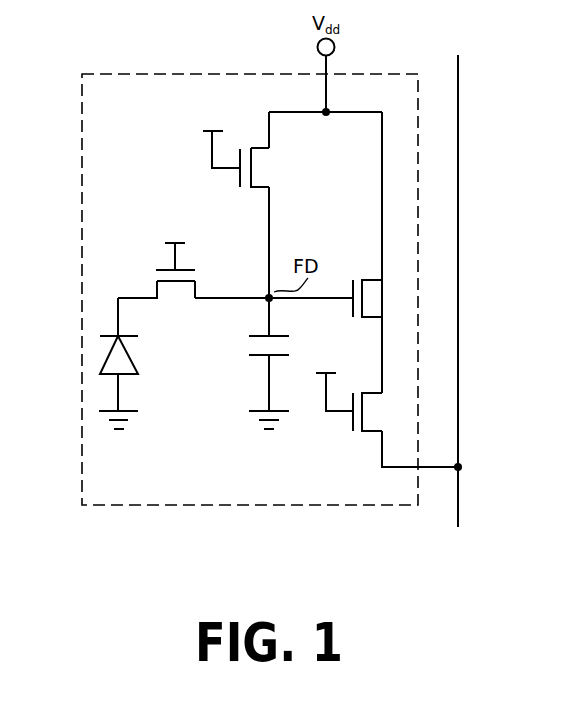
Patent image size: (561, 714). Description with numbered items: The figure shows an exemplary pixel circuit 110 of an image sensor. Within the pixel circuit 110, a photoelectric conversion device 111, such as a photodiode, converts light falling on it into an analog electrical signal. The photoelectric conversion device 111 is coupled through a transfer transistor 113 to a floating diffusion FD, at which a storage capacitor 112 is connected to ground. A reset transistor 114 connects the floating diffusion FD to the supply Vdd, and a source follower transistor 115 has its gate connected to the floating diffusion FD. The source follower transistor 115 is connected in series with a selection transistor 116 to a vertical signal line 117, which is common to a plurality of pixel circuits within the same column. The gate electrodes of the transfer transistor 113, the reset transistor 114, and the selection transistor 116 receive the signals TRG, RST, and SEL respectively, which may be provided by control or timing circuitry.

The pixel circuit 110 is at (100, 74).
The photoelectric conversion device 111 is at (104, 362).
The storage capacitor 112 is at (280, 357).
The transfer transistor 113 is at (176, 298).
The reset transistor 114 is at (268, 165).
The source follower transistor 115 is at (382, 298).
The selection transistor 116 is at (382, 412).
The vertical signal line 117 is at (458, 107).